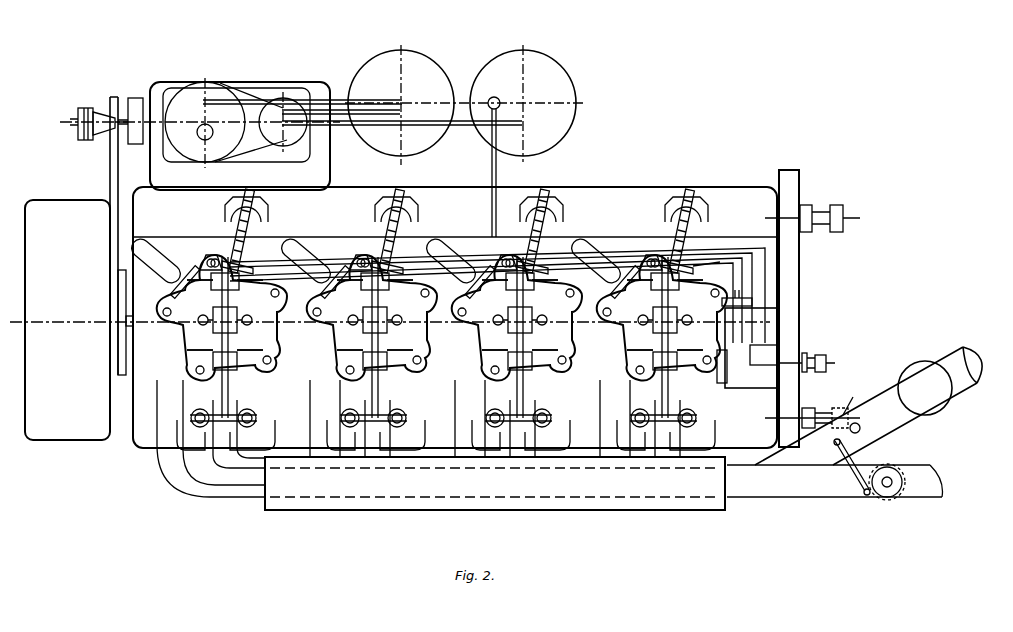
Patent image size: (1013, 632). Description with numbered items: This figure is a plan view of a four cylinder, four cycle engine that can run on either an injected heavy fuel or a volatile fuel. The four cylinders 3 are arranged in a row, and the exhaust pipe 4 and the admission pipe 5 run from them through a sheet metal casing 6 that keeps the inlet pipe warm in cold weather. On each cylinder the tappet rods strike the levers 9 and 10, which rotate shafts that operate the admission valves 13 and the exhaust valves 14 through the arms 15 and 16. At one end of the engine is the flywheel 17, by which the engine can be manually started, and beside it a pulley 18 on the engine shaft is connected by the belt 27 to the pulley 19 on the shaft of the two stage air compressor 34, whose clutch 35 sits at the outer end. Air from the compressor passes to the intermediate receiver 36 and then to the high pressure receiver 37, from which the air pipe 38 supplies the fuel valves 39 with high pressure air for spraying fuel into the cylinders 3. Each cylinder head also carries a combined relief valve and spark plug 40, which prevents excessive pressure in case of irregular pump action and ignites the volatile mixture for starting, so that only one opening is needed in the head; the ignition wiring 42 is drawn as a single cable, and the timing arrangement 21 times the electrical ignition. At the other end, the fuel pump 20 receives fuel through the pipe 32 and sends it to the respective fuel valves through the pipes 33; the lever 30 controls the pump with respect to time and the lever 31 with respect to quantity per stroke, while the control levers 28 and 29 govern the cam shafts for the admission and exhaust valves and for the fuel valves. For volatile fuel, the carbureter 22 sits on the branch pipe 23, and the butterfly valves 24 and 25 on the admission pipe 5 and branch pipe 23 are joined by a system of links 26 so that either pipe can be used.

The cylinders 3 is at (453, 320).
The exhaust pipe 4 is at (393, 438).
The admission pipe 5 is at (702, 388).
The sheet metal casing 6 is at (495, 483).
The levers 9 is at (640, 410).
The levers 10 is at (692, 415).
The admission valves 13 is at (470, 294).
The exhaust valves 14 is at (420, 294).
The arms 15 is at (470, 340).
The arms 16 is at (420, 340).
The flywheel 17 is at (67, 320).
The pulley 18 is at (133, 340).
The pulley 19 is at (134, 97).
The fuel pump 20 is at (751, 348).
The timing arrangement 21 is at (717, 372).
The carbureter 22 is at (854, 422).
The branch pipe 23 is at (828, 418).
The butterfly valve 24 is at (902, 478).
The butterfly valve 25 is at (860, 427).
The links 26 is at (852, 470).
The belt 27 is at (110, 170).
The control lever 28 is at (856, 397).
The control lever 29 is at (845, 218).
The lever 30 is at (827, 362).
The lever 31 is at (740, 296).
The pipe 32 is at (764, 355).
The pipes 33 is at (767, 248).
The two stage air compressor 34 is at (275, 100).
The clutch 35 is at (83, 107).
The intermediate receiver 36 is at (401, 103).
The high pressure receiver 37 is at (523, 103).
The air pipe 38 is at (497, 175).
The fuel valves 39 is at (700, 228).
The combined relief valve and spark plug 40 is at (582, 252).
The wiring 42 is at (705, 268).